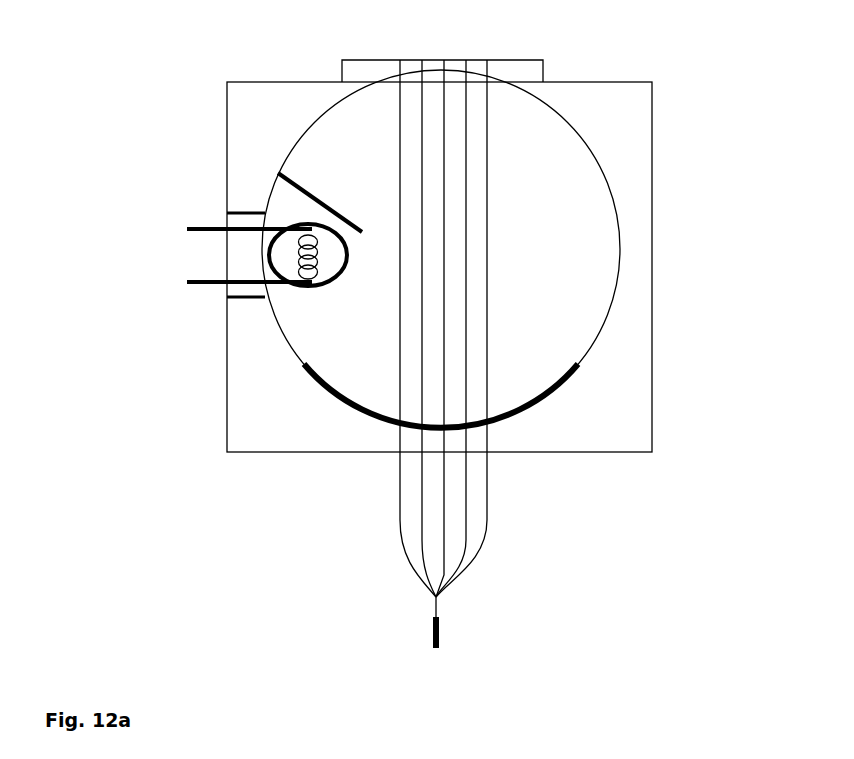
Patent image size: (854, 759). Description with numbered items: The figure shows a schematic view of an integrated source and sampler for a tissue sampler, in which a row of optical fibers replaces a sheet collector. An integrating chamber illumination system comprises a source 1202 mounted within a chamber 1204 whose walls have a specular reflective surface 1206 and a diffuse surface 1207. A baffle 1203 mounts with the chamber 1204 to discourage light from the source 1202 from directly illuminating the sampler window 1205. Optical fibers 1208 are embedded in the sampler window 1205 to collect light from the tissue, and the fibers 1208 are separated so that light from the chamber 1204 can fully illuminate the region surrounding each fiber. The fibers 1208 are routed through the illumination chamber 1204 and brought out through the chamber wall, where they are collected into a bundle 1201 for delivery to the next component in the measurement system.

The bundle 1201 is at (428, 652).
The source 1202 is at (298, 293).
The baffle 1203 is at (298, 193).
The chamber 1204 is at (338, 160).
The sampler window 1205 is at (338, 55).
The specular reflective surface 1206 is at (565, 250).
The diffuse surface 1207 is at (521, 357).
The optical fibers 1208 is at (493, 213).